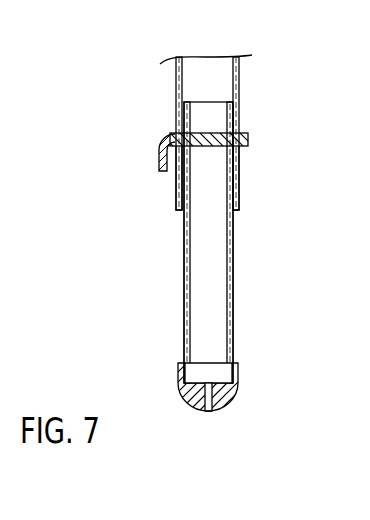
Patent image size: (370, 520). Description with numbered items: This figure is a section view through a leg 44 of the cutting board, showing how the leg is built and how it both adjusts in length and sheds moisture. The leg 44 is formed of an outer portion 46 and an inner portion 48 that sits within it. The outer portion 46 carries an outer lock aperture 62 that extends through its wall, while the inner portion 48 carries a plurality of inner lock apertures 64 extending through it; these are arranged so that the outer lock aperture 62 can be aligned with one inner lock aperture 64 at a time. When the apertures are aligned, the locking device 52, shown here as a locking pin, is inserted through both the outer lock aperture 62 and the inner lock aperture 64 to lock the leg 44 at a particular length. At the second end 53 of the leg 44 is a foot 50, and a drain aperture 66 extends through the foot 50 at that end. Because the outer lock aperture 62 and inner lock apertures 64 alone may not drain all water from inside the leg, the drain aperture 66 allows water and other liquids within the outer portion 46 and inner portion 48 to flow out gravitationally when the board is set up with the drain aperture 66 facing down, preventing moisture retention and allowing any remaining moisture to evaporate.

The leg 44 is at (128, 93).
The outer portion 46 is at (240, 83).
The outer lock aperture 62 is at (237, 133).
The locking device 52 is at (158, 146).
The inner lock aperture 64 is at (240, 184).
The inner portion 48 is at (233, 263).
The second end 53 is at (208, 367).
The foot 50 is at (237, 386).
The drain aperture 66 is at (209, 411).